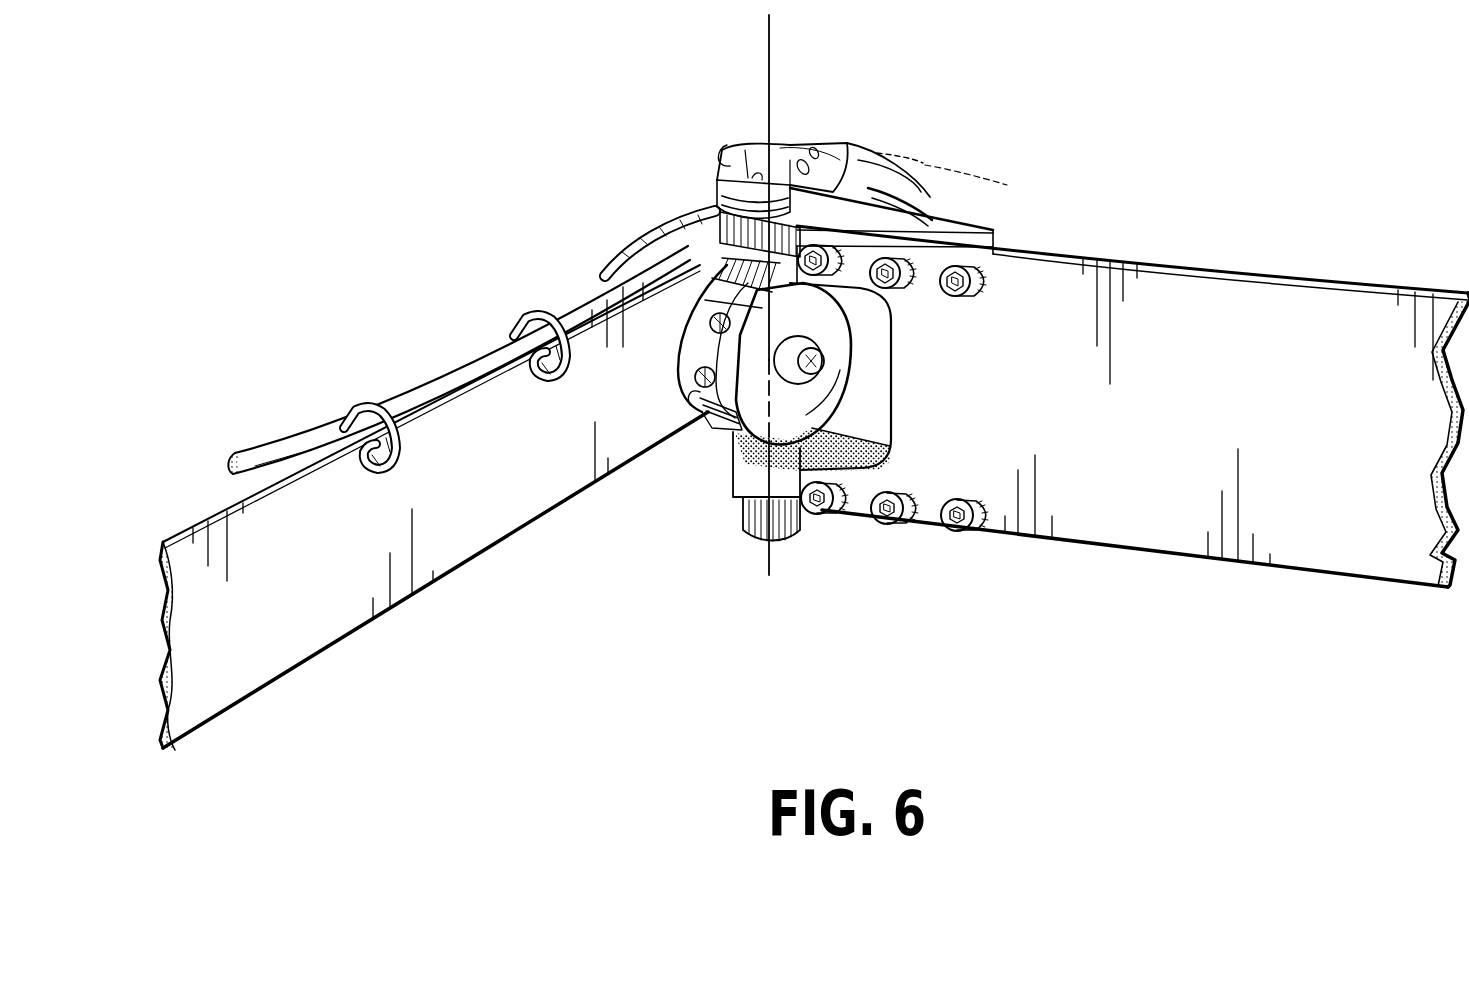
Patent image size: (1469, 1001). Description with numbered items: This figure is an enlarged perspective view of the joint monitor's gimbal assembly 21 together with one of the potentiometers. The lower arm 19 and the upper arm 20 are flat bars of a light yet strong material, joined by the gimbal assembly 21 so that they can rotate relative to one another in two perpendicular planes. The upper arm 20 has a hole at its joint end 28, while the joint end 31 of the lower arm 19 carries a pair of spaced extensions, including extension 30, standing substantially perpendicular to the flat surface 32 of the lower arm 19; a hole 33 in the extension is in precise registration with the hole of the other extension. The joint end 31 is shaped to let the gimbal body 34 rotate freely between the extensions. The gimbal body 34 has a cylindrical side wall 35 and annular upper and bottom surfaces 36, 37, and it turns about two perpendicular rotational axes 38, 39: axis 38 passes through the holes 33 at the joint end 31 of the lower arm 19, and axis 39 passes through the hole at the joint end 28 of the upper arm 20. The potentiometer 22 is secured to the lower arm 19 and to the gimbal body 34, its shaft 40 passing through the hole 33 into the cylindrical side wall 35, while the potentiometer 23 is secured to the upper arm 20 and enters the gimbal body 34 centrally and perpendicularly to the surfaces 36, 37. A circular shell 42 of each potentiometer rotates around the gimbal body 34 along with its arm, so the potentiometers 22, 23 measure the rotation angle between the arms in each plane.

The lower arm 19 is at (1203, 307).
The upper arm 20 is at (335, 608).
The gimbal assembly 21 is at (670, 337).
The potentiometer 22 is at (733, 148).
The potentiometer 23 is at (913, 222).
The joint end 28 is at (680, 407).
The extension 30 is at (850, 468).
The joint end 31 is at (995, 217).
The flat surface 32 is at (833, 210).
The hole 33 is at (823, 358).
The gimbal body 34 is at (713, 406).
The cylindrical side wall 35 is at (730, 292).
The annular upper surface 36 is at (678, 388).
The annular bottom surface 37 is at (830, 344).
The rotational axis 38 is at (782, 18).
The rotational axis 39 is at (747, 330).
The shaft 40 is at (772, 538).
The circular shell 42 is at (763, 183).